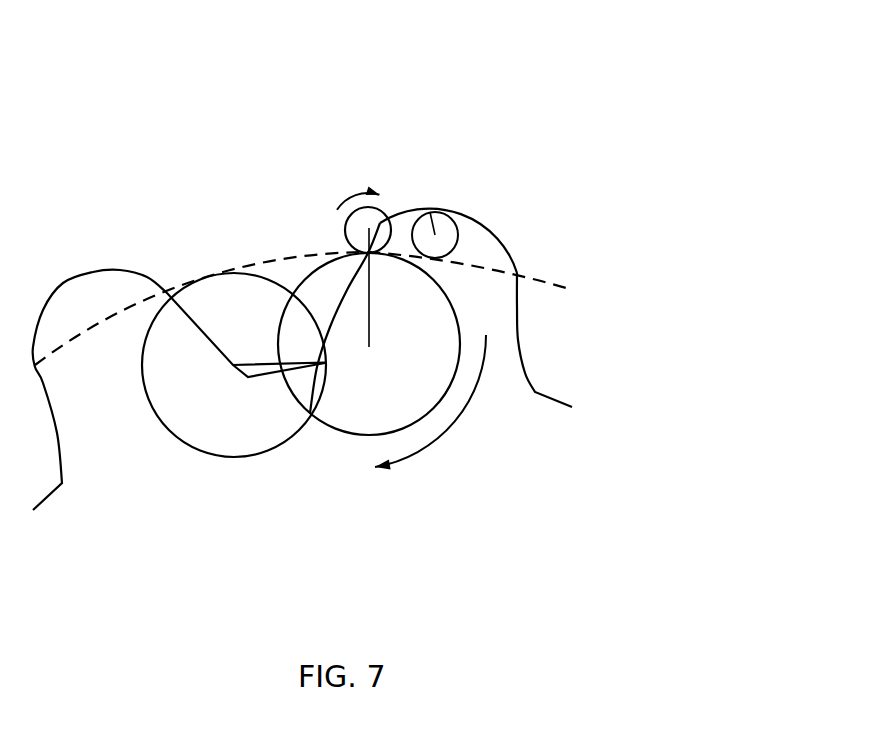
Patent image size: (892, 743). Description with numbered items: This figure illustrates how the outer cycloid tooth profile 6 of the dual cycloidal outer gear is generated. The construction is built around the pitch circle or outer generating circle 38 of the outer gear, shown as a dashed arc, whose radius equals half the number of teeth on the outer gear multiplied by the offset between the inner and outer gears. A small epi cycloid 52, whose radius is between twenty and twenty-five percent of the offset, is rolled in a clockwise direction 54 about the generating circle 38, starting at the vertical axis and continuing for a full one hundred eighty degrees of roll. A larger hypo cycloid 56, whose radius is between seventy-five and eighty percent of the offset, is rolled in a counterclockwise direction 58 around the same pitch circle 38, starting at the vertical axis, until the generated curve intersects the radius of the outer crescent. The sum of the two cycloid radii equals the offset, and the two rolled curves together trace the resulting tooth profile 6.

The tooth profile 6 is at (558, 402).
The pitch circle or outer generating circle 38 is at (553, 282).
The epi cycloid 52 is at (387, 207).
The clockwise direction 54 is at (340, 203).
The hypo cycloid 56 is at (458, 345).
The counterclockwise direction 58 is at (430, 452).